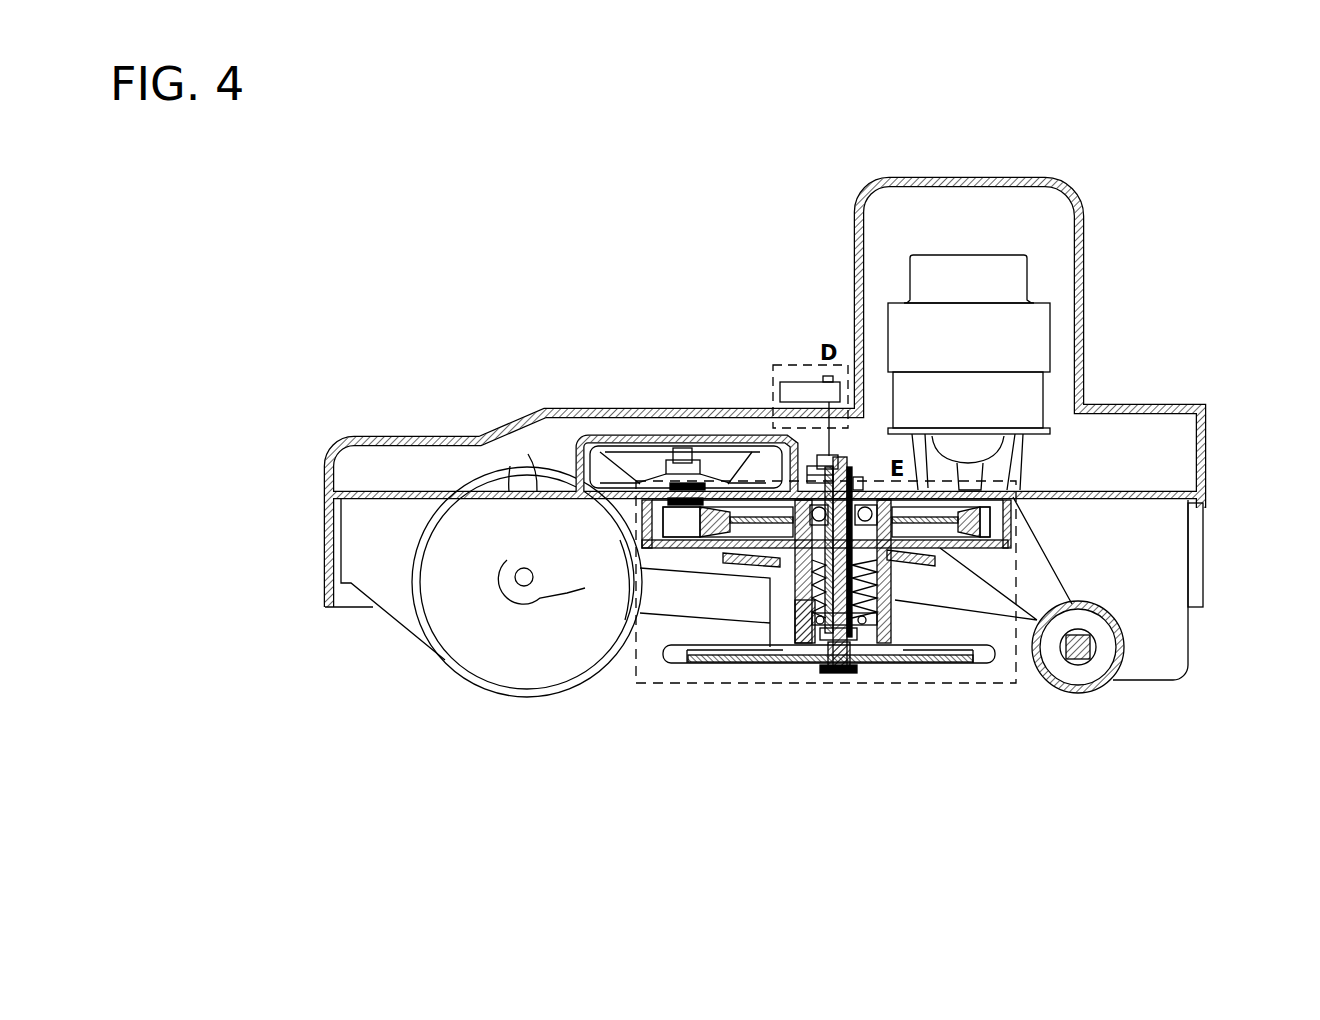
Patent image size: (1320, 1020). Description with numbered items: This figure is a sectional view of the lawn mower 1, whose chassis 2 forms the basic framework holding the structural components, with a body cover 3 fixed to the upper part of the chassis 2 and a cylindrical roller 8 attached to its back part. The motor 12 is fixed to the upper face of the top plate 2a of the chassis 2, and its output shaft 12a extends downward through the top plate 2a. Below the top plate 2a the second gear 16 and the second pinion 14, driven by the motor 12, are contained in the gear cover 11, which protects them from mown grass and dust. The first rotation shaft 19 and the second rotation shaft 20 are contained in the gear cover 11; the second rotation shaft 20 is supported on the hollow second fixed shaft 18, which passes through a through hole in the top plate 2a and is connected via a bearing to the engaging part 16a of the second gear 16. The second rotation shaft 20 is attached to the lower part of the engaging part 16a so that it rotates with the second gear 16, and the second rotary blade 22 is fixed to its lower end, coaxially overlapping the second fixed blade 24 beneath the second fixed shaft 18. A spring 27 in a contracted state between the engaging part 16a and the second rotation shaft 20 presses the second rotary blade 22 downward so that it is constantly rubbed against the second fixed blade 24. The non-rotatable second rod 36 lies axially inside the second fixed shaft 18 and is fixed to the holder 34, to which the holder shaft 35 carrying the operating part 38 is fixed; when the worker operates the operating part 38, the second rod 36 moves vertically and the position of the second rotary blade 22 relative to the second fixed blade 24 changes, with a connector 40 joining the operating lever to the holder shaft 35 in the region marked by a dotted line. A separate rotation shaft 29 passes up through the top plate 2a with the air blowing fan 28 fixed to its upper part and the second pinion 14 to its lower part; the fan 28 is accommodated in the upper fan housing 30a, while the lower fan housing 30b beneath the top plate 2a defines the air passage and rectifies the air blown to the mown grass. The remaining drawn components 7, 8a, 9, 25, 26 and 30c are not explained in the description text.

The lawn mower 1 is at (345, 208).
The chassis 2 is at (373, 560).
The top plate 2a is at (1152, 490).
The body cover 3 is at (345, 440).
The drive wheel 7 is at (480, 678).
The roller 8 is at (1113, 678).
The axle 8a is at (1078, 660).
The arm 9 is at (1055, 580).
The gear cover 11 is at (1010, 538).
The motor 12 is at (970, 275).
The output shaft 12a is at (973, 475).
The second pinion 14 is at (660, 547).
The second gear 16 is at (982, 515).
The engaging part 16a is at (940, 550).
The second fixed shaft 18 is at (852, 470).
The first rotation shaft 19 is at (782, 583).
The second rotation shaft 20 is at (886, 590).
The second rotary blade 22 is at (977, 653).
The second fixed blade 24 is at (968, 665).
The washer 25 is at (822, 665).
The nut 26 is at (843, 675).
The spring 27 is at (800, 646).
The air blowing fan 28 is at (607, 457).
The rotation shaft 29 is at (687, 457).
The upper fan housing 30a is at (533, 462).
The lower fan housing 30b is at (522, 527).
The belt guide 30c is at (625, 592).
The holder 34 is at (817, 458).
The holder shaft 35 is at (787, 410).
The second rod 36 is at (838, 452).
The operating part 38 is at (803, 382).
The connector 40 is at (888, 626).